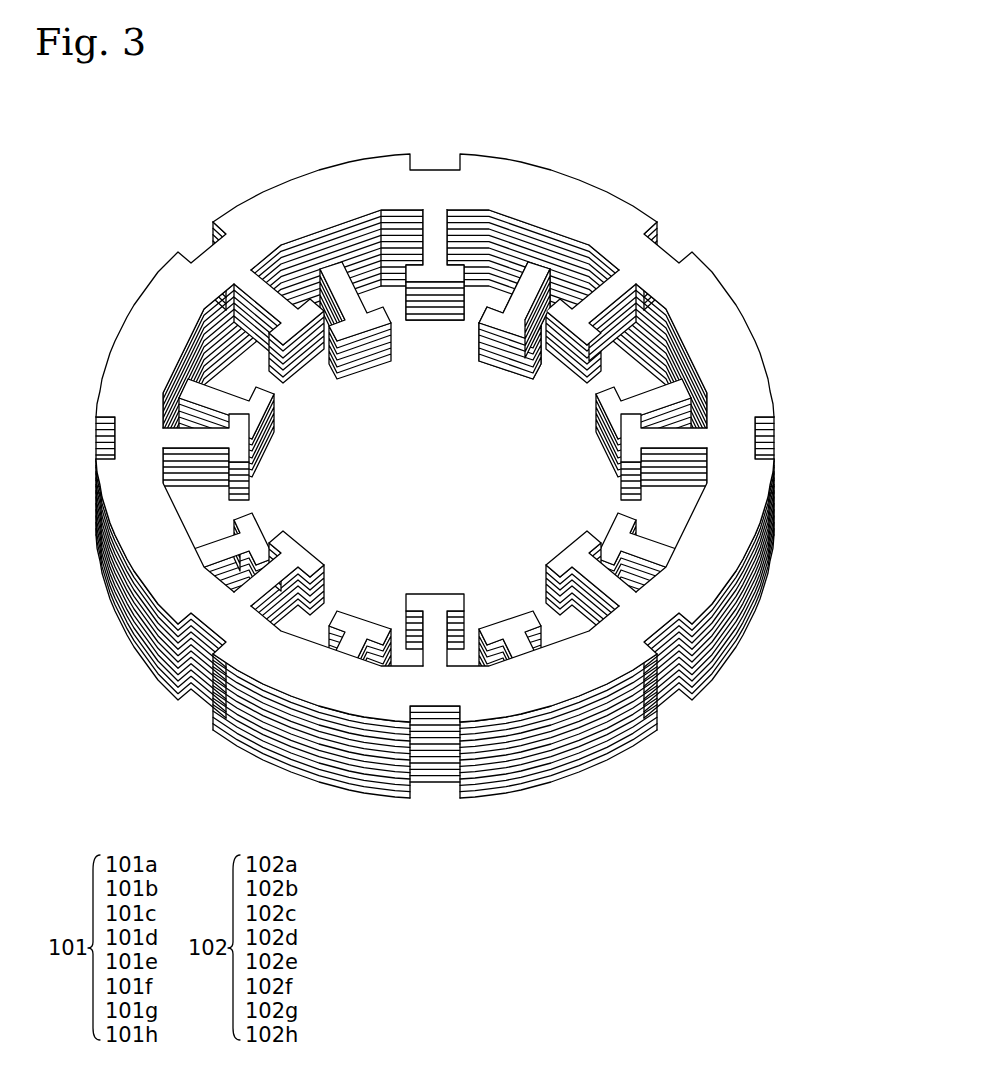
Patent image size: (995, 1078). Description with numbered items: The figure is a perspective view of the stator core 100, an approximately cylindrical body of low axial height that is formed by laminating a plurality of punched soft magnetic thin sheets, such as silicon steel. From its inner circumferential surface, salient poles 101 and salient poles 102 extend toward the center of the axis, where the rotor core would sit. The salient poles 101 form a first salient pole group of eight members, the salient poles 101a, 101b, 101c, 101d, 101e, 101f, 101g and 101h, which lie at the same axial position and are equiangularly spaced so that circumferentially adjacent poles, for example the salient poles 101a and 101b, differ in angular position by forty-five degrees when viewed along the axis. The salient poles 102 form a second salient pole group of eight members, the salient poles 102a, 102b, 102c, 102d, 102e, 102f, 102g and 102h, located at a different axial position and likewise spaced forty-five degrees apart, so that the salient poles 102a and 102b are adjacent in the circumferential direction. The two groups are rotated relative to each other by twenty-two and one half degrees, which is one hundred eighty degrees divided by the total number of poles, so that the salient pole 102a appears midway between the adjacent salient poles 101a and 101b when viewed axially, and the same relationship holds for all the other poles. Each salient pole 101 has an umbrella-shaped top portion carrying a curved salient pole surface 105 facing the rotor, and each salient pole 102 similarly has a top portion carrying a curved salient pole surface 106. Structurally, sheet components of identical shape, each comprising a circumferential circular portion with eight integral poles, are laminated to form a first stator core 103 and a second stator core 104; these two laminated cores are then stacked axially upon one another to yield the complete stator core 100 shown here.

The stator core 100 is at (435, 467).
The salient poles 101 is at (437, 225).
The salient poles 102 is at (529, 278).
The first stator core 103 is at (88, 466).
The second stator core 104 is at (88, 502).
The salient pole surface 105 is at (440, 297).
The salient pole surface 106 is at (507, 347).
The salient pole 101a is at (252, 288).
The salient pole 102a is at (336, 276).
The salient pole 101b is at (440, 255).
The salient pole 102b is at (535, 268).
The salient pole 101c is at (593, 296).
The salient pole 102c is at (677, 387).
The salient pole 101d is at (660, 437).
The salient pole 102d is at (650, 545).
The salient pole 101e is at (613, 587).
The salient pole 102e is at (520, 648).
The salient pole 101f is at (440, 647).
The salient pole 102f is at (350, 650).
The salient pole 101g is at (210, 553).
The salient pole 102g is at (142, 662).
The salient pole 101h is at (180, 448).
The salient pole 102h is at (217, 402).